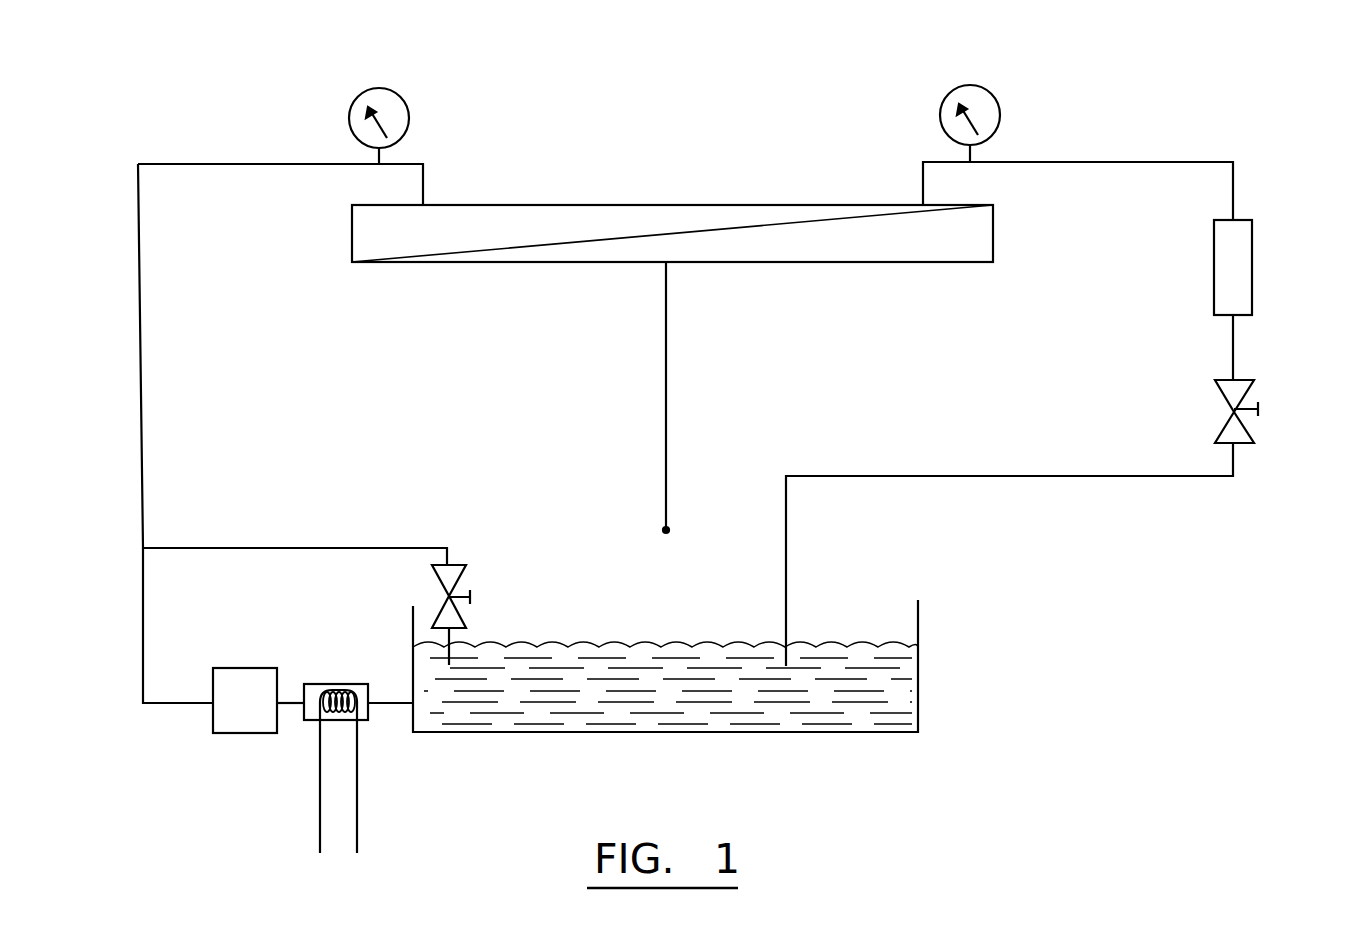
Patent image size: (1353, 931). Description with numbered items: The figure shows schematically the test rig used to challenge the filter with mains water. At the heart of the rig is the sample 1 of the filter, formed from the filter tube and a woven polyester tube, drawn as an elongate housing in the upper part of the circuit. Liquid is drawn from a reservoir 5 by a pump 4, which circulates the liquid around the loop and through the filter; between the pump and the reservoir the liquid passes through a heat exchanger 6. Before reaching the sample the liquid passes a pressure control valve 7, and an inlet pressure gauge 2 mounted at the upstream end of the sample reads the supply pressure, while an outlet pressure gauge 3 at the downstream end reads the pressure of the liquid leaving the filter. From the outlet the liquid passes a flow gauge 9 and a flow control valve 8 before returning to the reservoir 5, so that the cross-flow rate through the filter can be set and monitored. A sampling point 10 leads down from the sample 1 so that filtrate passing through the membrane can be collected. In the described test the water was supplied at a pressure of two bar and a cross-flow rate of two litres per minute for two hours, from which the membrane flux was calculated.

The sample 1 is at (700, 215).
The inlet pressure gauge 2 is at (400, 112).
The outlet pressure gauge 3 is at (983, 112).
The pump 4 is at (243, 712).
The reservoir 5 is at (910, 710).
The heat exchanger 6 is at (338, 688).
The pressure control valve 7 is at (452, 596).
The flow control valve 8 is at (1236, 412).
The flow gauge 9 is at (1238, 275).
The sampling point 10 is at (666, 530).